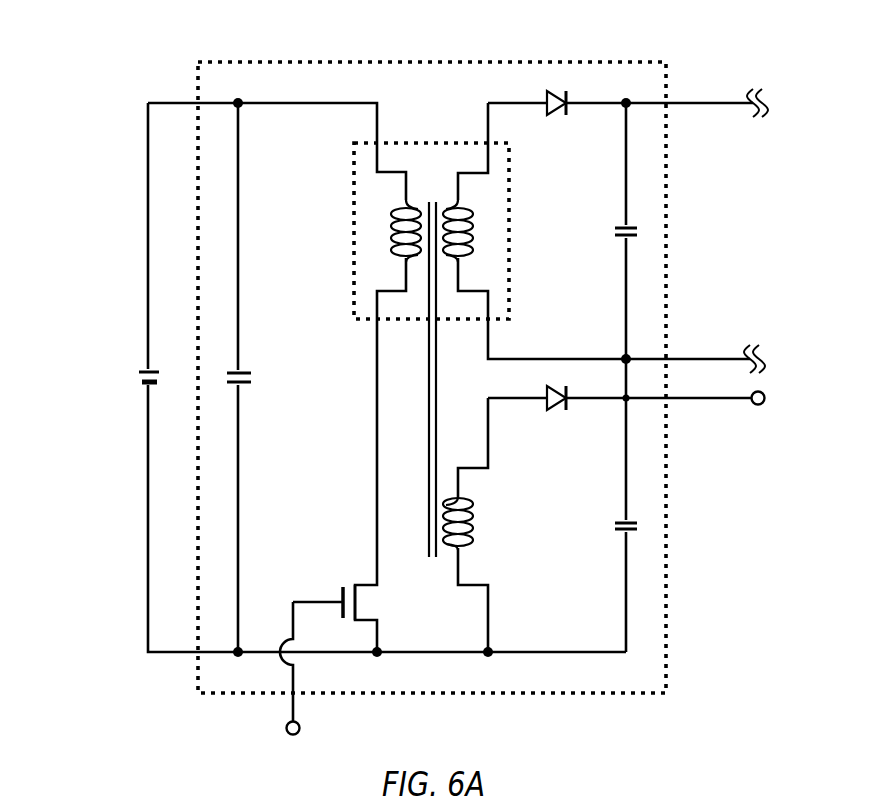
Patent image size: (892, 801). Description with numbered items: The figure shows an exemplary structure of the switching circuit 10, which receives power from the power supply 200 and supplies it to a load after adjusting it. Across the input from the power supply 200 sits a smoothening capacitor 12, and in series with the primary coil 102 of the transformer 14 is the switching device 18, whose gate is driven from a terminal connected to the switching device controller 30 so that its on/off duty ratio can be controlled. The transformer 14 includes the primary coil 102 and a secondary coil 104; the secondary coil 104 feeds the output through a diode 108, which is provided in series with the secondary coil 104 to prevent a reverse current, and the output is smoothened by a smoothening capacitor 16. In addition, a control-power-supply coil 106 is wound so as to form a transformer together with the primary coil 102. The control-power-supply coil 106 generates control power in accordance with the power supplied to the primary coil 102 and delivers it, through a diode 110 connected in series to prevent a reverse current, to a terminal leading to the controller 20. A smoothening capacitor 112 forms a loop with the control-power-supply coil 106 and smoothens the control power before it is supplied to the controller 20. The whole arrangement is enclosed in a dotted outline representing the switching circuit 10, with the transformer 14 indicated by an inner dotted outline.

The switching circuit 10 is at (432, 61).
The transformer 14 is at (425, 143).
The primary coil 102 is at (367, 247).
The secondary coil 104 is at (499, 238).
The control-power-supply coil 106 is at (500, 522).
The diode 108 is at (552, 114).
The diode 110 is at (552, 408).
The smoothening capacitor 16 is at (620, 241).
The smoothening capacitor 112 is at (620, 535).
The smoothening capacitor 12 is at (250, 382).
The power supply 200 is at (139, 372).
The switching device 18 is at (343, 585).
The controller 20 is at (775, 398).
The switching device controller 30 is at (293, 747).